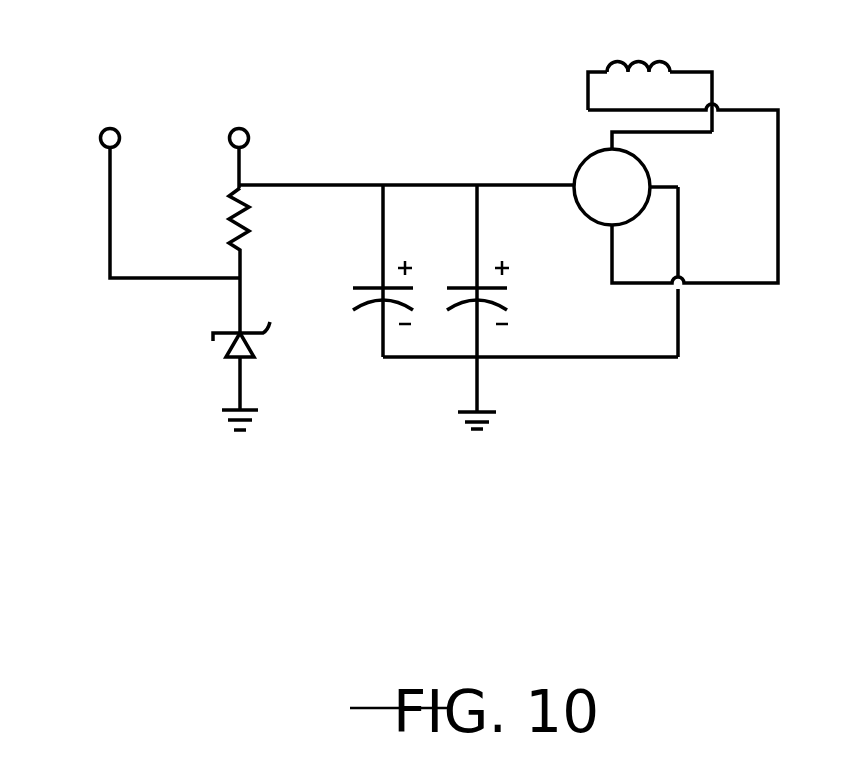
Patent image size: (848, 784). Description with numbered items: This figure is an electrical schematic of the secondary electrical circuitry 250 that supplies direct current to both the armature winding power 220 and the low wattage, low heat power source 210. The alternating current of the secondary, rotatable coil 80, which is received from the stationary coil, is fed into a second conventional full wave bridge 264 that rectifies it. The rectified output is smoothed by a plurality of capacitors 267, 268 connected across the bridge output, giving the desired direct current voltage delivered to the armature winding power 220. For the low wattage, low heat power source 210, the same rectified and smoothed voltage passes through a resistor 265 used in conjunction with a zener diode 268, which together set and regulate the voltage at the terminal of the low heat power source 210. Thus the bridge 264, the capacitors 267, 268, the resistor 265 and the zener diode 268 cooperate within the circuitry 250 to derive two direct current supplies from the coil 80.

The secondary rotatable coil 80 is at (660, 63).
The low wattage, low heat power source 210 is at (109, 128).
The armature winding power 220 is at (248, 130).
The secondary electrical circuitry 250 is at (131, 326).
The second conventional full wave bridge 264 is at (612, 187).
The resistor 265 is at (232, 214).
The capacitor 267 is at (360, 308).
The capacitor / zener diode 268 is at (230, 349).